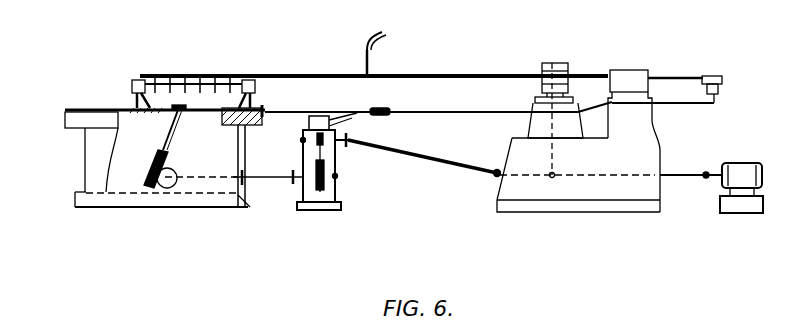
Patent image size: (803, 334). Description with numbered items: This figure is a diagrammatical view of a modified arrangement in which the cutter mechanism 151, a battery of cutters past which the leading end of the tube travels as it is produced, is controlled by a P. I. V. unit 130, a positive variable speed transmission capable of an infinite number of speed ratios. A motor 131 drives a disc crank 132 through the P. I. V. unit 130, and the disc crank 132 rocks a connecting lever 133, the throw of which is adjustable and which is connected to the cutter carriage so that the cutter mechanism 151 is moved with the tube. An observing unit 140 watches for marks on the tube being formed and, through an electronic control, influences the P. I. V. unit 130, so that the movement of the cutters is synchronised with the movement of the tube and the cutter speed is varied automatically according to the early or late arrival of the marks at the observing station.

The cutter mechanism 151 is at (178, 78).
The observing unit 140 is at (372, 54).
The connecting lever 133 is at (157, 152).
The disc crank 132 is at (170, 188).
The P. I. V. unit 130 is at (335, 163).
The motor 131 is at (750, 162).